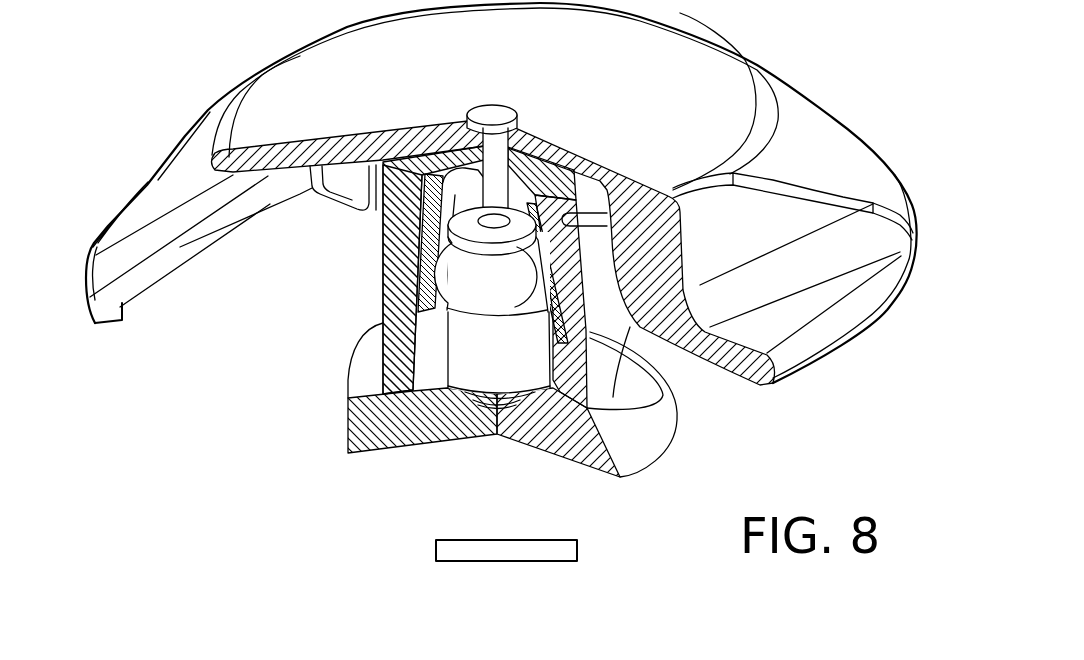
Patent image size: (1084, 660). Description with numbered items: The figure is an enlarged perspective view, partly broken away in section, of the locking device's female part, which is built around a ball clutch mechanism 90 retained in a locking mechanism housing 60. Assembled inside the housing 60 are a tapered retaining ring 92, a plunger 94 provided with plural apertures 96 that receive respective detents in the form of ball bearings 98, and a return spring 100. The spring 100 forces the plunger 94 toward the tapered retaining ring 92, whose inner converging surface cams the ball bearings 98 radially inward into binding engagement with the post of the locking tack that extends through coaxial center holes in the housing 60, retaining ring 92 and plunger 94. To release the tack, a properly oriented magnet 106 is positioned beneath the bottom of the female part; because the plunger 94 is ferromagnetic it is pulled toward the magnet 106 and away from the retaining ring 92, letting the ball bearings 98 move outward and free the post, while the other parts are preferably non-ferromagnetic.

The locking mechanism housing 60 is at (383, 323).
The ball clutch mechanism 90 is at (457, 412).
The tapered retaining ring 92 is at (385, 236).
The plunger 94 is at (525, 367).
The apertures 96 is at (568, 320).
The ball bearings 98 is at (447, 270).
The return spring 100 is at (492, 410).
The magnet 106 is at (578, 551).